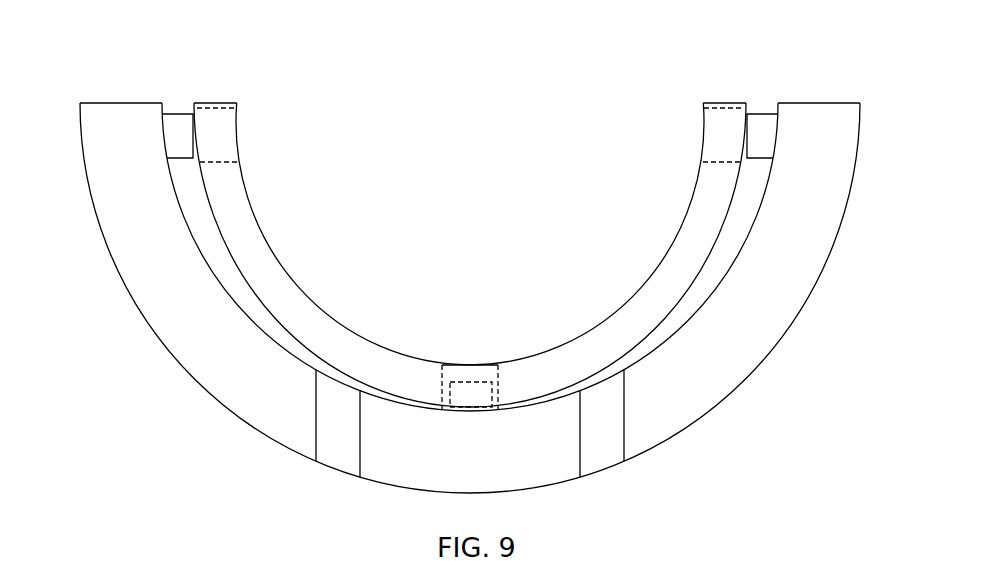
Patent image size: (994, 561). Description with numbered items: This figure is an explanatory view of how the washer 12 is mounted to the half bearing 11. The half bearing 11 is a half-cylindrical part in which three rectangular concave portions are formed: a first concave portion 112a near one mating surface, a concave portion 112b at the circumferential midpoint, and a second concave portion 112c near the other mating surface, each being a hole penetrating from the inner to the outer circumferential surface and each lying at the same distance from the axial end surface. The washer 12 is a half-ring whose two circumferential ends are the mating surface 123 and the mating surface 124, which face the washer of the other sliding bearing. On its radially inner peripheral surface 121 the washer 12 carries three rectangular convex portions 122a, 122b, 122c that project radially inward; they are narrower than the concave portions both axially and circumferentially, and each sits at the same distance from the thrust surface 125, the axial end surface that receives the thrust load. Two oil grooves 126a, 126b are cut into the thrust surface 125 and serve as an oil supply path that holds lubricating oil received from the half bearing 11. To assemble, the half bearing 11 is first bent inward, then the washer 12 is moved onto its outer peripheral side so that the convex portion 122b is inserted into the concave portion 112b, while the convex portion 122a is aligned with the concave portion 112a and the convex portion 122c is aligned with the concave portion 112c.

The half bearing 11 is at (595, 247).
The washer 12 is at (765, 398).
The concave portion 112a is at (218, 162).
The concave portion 112b is at (494, 383).
The concave portion 112c is at (724, 162).
The inner peripheral surface 121 is at (692, 308).
The convex portion 122a is at (174, 116).
The convex portion 122b is at (460, 382).
The convex portion 122c is at (767, 118).
The mating surface 123 is at (127, 103).
The mating surface 124 is at (813, 103).
The thrust surface 125 is at (683, 407).
The oil groove 126a is at (333, 452).
The oil groove 126b is at (608, 452).